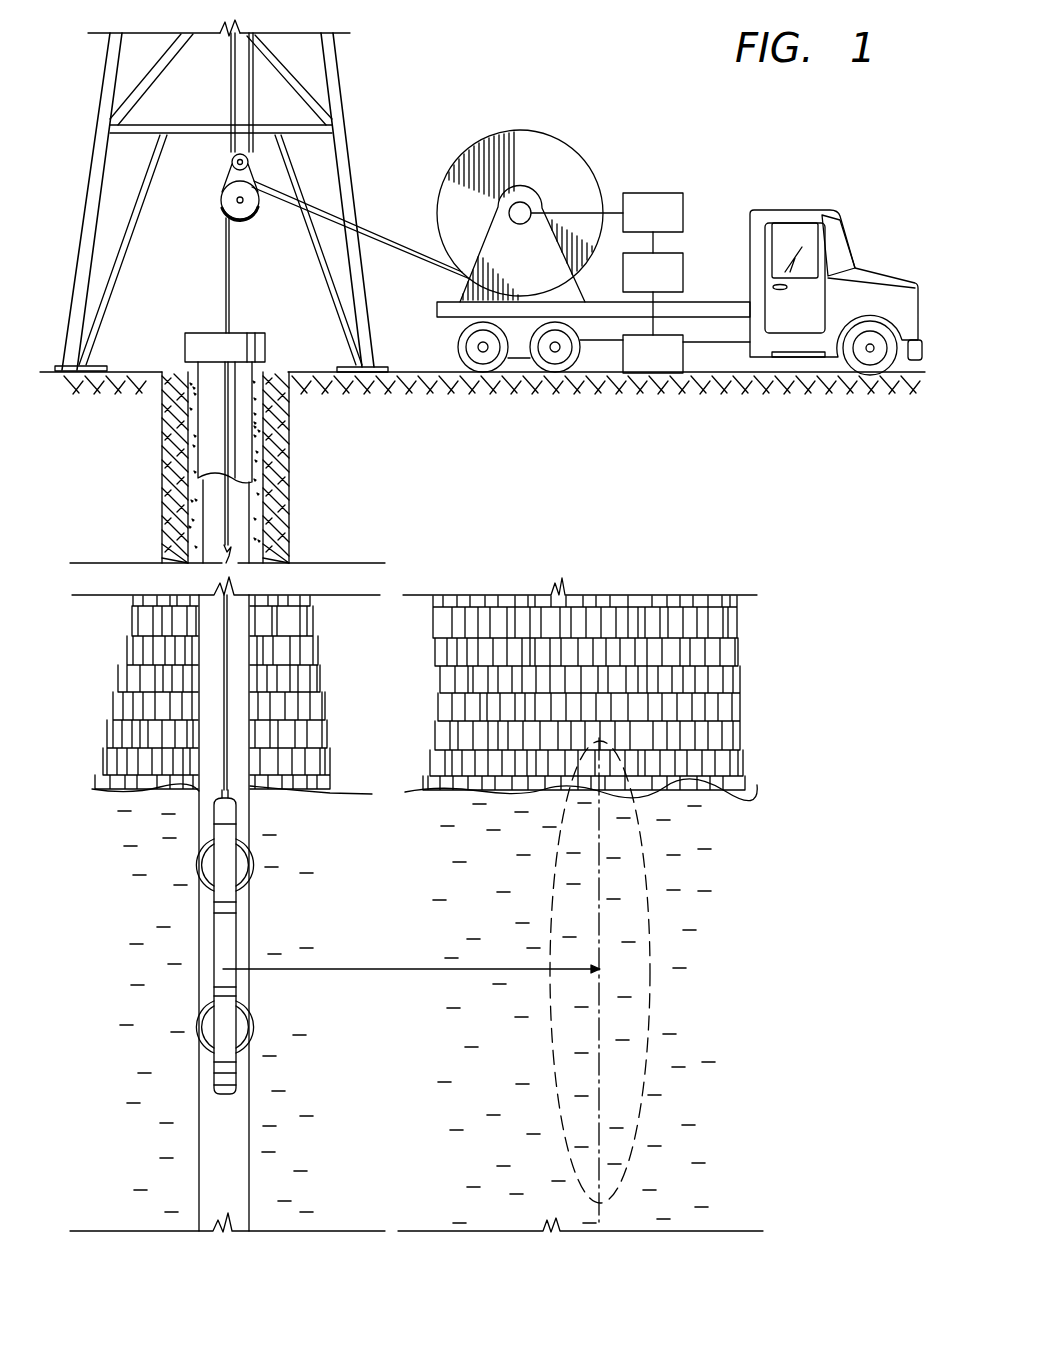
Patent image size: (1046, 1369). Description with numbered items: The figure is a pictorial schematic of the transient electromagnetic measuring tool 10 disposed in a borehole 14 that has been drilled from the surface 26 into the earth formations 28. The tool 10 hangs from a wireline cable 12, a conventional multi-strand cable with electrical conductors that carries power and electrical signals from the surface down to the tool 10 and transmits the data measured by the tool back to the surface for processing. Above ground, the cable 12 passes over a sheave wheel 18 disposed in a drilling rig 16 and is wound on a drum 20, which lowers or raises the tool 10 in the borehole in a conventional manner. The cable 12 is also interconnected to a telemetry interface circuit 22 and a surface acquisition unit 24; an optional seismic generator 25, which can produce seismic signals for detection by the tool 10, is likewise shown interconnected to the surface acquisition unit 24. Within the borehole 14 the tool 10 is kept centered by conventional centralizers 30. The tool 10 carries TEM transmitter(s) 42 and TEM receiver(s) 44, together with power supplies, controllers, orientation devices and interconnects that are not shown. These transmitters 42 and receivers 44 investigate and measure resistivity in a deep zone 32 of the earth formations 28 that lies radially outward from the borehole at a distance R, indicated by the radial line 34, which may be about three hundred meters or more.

The transient electromagnetic measuring tool 10 is at (251, 942).
The wireline cable 12 is at (232, 280).
The borehole 14 is at (252, 520).
The drilling rig 16 is at (102, 86).
The sheave wheel 18 is at (222, 200).
The drum 20 is at (465, 152).
The telemetry interface circuit 22 is at (683, 213).
The surface acquisition unit 24 is at (683, 272).
The seismic generator 25 is at (683, 357).
The earth surface 26 is at (413, 370).
The earth formations 28 is at (709, 1004).
The centralizers 30 is at (251, 850).
The deep zone 32 is at (626, 915).
The radial line 34 is at (395, 966).
The TEM transmitter(s) 42 is at (237, 827).
The TEM receiver(s) 44 is at (228, 990).